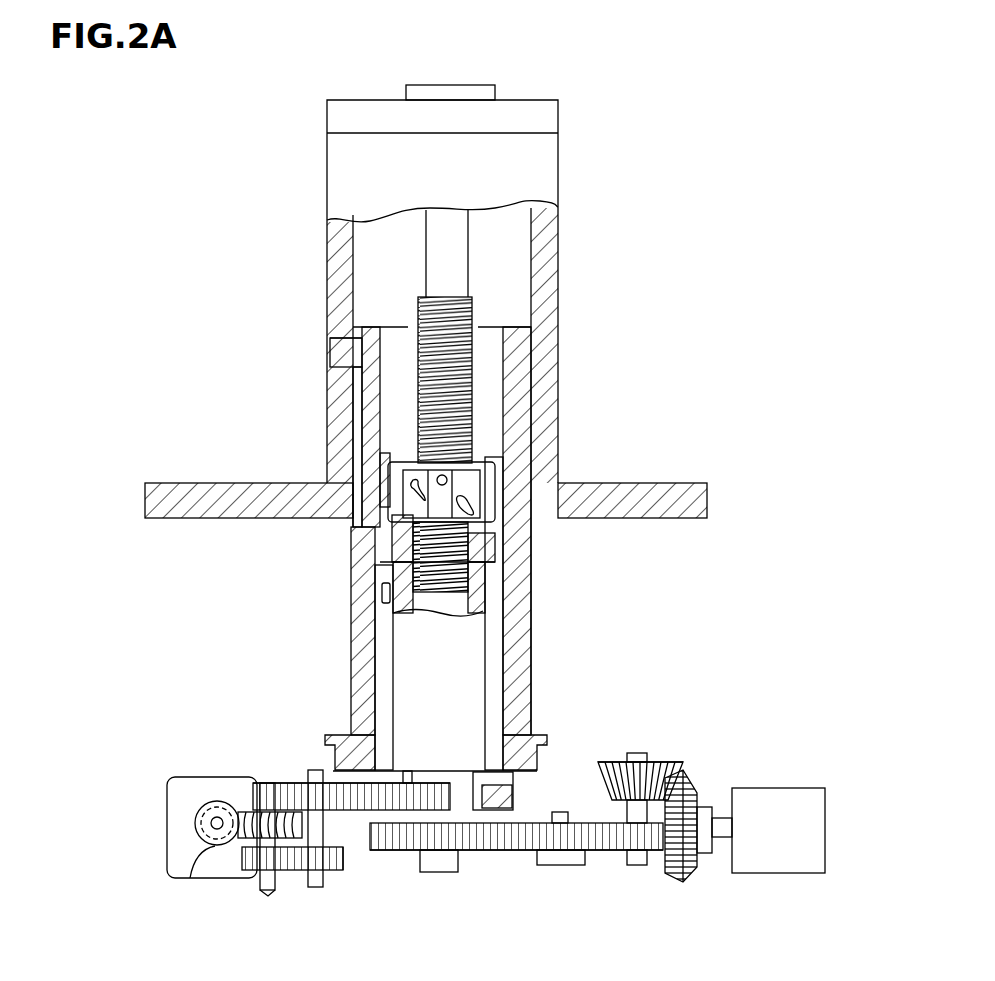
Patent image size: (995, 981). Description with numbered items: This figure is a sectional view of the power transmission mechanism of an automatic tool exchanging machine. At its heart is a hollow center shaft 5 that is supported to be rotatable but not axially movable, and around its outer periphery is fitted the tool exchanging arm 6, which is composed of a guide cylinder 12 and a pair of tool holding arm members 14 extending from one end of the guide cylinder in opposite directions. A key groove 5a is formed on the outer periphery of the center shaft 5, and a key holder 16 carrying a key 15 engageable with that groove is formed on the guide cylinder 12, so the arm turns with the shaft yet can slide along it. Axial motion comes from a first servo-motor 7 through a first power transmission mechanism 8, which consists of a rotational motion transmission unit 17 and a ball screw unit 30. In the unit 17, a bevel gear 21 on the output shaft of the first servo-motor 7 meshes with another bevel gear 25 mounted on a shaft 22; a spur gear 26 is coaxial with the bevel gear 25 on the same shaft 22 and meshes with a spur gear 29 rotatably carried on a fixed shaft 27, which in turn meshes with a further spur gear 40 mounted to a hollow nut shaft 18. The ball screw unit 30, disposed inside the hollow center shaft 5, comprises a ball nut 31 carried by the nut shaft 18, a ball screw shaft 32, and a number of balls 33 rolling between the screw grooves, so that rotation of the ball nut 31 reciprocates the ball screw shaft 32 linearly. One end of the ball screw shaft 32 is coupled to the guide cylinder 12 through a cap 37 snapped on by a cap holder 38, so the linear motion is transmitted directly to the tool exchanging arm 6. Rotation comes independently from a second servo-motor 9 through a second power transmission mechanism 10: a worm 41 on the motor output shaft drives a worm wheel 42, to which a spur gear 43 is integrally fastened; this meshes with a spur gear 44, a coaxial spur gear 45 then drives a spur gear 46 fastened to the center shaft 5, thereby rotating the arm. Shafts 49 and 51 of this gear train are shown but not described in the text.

The center shaft 5 is at (350, 607).
The key groove 5a is at (340, 400).
The tool exchanging arm 6 is at (568, 335).
The first servo-motor 7 is at (800, 788).
The first power transmission mechanism 8 is at (633, 733).
The second servo-motor 9 is at (178, 777).
The second power transmission mechanism 10 is at (261, 752).
The guide cylinder 12 is at (553, 390).
The tool holding arm members 14 is at (215, 482).
The key 15 is at (345, 347).
The key holder 16 is at (314, 342).
The rotational motion transmission unit 17 is at (599, 890).
The nut shaft 18 is at (487, 648).
The bevel gear 21 is at (692, 797).
The shaft 22 is at (632, 815).
The bevel gear 25 is at (672, 765).
The spur gear 26 is at (645, 851).
The fixed shaft 27 is at (555, 866).
The spur gear 29 is at (525, 851).
The ball screw unit 30 is at (488, 441).
The ball nut 31 is at (488, 483).
The ball screw shaft 32 is at (466, 576).
The balls 33 is at (472, 545).
The cap 37 is at (521, 104).
The cap holder 38 is at (478, 88).
The spur gear 40 is at (470, 851).
The worm 41 is at (190, 860).
The worm wheel 42 is at (230, 872).
The spur gear 43 is at (283, 872).
The spur gear 44 is at (343, 872).
The spur gear 45 is at (335, 782).
The spur gear 46 is at (385, 810).
The shaft 49 is at (262, 893).
The shaft 51 is at (314, 890).